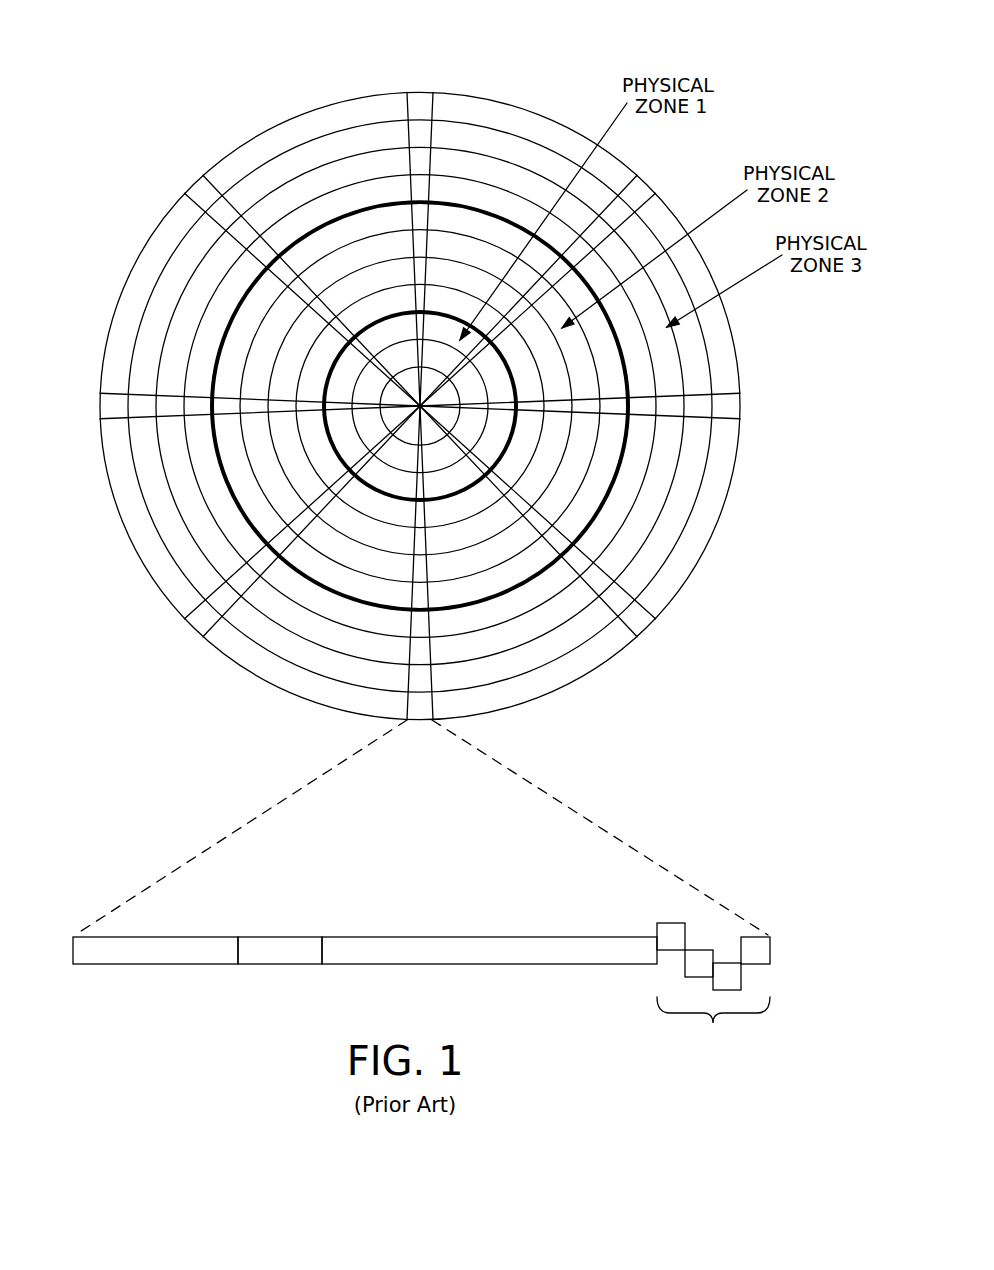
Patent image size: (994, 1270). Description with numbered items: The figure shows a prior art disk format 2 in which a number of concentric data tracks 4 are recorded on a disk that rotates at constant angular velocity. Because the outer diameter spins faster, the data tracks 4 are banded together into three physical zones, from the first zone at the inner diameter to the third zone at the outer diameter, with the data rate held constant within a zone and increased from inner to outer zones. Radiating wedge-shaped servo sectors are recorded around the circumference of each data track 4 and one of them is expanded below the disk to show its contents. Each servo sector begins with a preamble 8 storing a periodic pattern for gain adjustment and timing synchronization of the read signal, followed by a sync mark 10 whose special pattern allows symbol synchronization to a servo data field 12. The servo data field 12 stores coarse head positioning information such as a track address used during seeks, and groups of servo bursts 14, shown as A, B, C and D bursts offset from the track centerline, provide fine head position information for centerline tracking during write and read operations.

The disk format 2 is at (420, 416).
The data tracks 4 is at (530, 157).
The preamble 8 is at (137, 962).
The sync mark 10 is at (278, 962).
The servo data field 12 is at (478, 962).
The servo bursts 14 is at (645, 905).